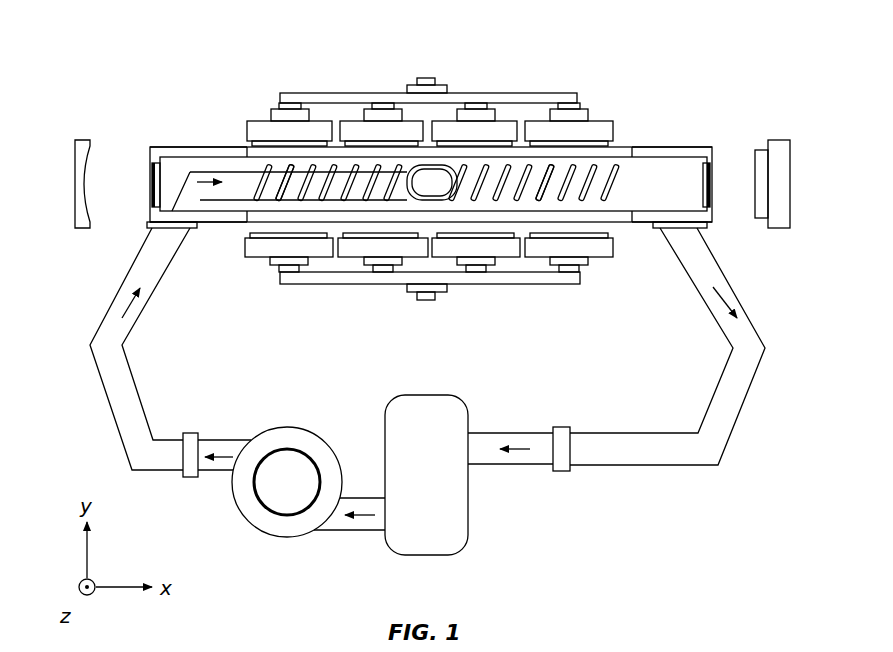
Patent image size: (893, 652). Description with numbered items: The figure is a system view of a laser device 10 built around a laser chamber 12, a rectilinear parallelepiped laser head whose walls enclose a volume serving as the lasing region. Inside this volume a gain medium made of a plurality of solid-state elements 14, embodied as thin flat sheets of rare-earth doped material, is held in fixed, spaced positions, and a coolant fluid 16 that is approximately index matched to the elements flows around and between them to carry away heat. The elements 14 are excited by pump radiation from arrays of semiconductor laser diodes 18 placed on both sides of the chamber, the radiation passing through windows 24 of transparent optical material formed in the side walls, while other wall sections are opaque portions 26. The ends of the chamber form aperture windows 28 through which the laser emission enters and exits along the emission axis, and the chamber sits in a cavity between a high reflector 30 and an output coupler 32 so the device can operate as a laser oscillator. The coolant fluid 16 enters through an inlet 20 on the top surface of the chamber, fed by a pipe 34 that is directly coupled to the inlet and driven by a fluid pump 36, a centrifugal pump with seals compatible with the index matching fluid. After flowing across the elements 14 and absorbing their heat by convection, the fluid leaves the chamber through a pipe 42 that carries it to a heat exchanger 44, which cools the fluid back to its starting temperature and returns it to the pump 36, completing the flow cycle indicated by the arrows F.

The laser device 10 is at (609, 78).
The laser chamber 12 is at (643, 137).
The solid-state elements 14 is at (338, 205).
The coolant fluid 16 is at (641, 207).
The semiconductor laser diodes 18 is at (247, 132).
The inlet 20 is at (420, 201).
The windows 24 is at (545, 153).
The opaque portions 26 is at (187, 147).
The aperture windows 28 is at (149, 185).
The high reflector 30 is at (82, 232).
The output coupler 32 is at (777, 140).
The pipe 34 is at (122, 357).
The fluid pump 36 is at (322, 442).
The pipe 42 is at (737, 317).
The heat exchanger 44 is at (430, 395).